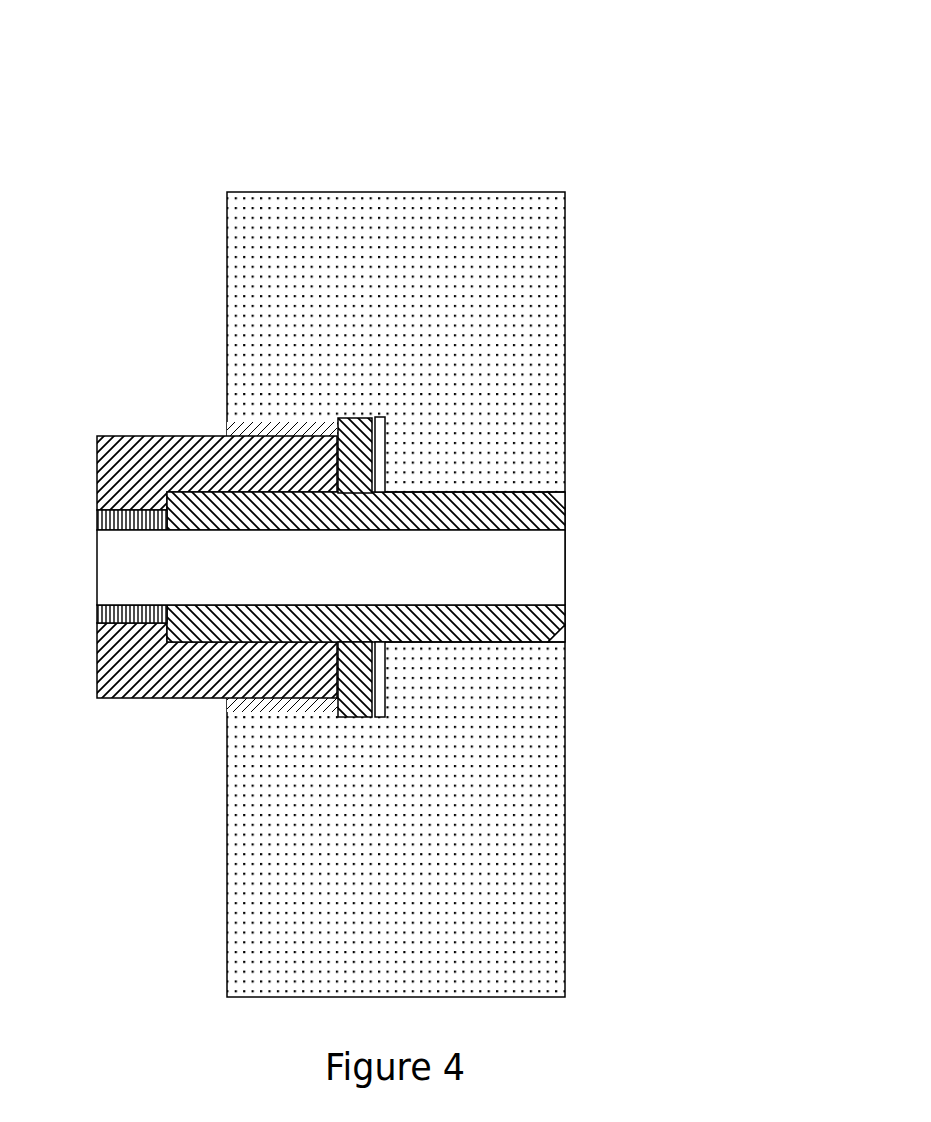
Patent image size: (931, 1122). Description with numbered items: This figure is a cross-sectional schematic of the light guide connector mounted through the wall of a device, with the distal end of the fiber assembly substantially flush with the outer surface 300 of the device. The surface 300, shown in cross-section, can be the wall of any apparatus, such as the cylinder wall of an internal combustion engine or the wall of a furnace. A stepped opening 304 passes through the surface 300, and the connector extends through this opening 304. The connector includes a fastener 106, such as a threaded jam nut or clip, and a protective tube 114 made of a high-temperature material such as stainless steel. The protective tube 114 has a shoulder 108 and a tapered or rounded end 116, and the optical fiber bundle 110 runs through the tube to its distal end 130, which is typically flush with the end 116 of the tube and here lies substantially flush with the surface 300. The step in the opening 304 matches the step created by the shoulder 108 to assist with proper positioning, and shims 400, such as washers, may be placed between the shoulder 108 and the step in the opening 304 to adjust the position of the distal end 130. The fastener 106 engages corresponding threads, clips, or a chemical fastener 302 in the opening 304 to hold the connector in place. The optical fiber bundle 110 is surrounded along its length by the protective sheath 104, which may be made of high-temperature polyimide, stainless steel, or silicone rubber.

The protective sheath 104 is at (117, 508).
The fastener 106 is at (139, 420).
The shoulder 108 is at (358, 404).
The optical fiber bundle 110 is at (272, 546).
The protective tube 114 is at (497, 507).
The tapered or rounded end 116 is at (563, 500).
The distal end of the optical fiber bundle 130 is at (580, 574).
The surface of a device 300 is at (561, 854).
The threads, clips, or chemical fastener 302 is at (249, 730).
The opening 304 is at (579, 633).
The shims 400 is at (389, 436).